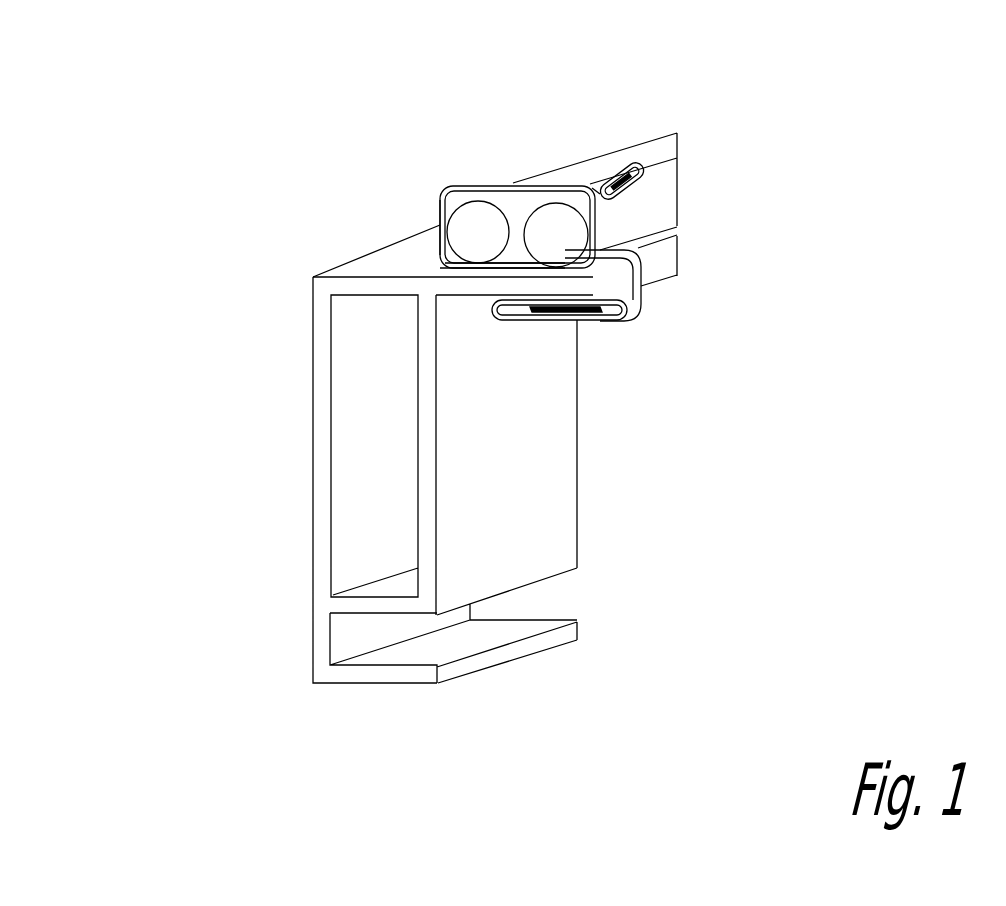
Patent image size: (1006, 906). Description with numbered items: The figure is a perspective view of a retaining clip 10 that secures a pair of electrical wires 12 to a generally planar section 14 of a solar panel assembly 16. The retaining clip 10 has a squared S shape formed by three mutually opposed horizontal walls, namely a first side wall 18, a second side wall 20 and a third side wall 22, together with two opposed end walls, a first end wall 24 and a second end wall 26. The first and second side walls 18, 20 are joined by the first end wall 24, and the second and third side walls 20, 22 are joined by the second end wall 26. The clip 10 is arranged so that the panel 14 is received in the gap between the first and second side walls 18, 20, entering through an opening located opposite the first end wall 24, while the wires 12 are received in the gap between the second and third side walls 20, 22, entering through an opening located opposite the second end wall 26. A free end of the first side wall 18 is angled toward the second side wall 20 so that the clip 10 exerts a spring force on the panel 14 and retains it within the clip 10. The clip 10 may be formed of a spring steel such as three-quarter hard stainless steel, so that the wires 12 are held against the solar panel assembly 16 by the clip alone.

The retaining clip 10 is at (590, 188).
The electrical wires 12 is at (465, 233).
The generally planar section 14 is at (472, 302).
The solar panel assembly 16 is at (310, 412).
The first side wall 18 is at (592, 322).
The second side wall 20 is at (462, 265).
The third side wall 22 is at (485, 187).
The first end wall 24 is at (643, 285).
The second end wall 26 is at (440, 205).